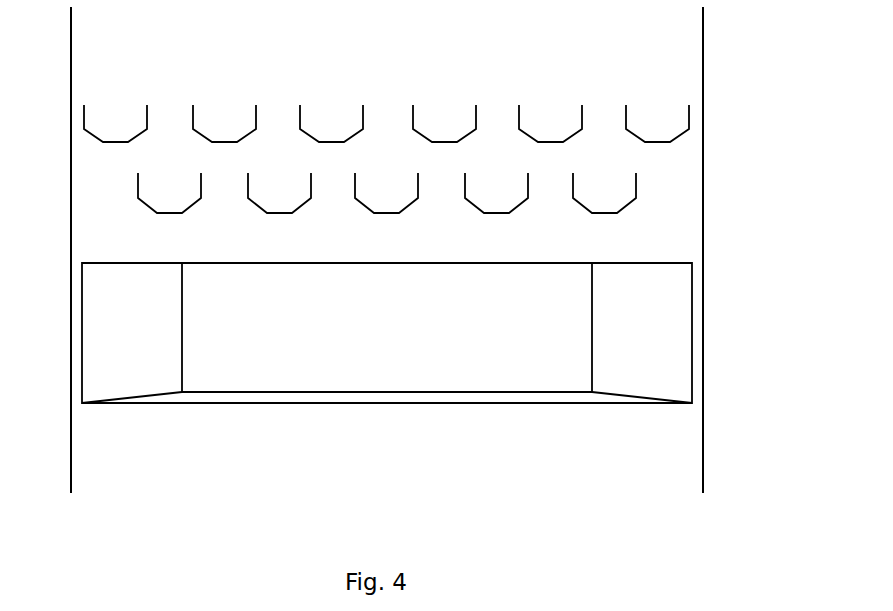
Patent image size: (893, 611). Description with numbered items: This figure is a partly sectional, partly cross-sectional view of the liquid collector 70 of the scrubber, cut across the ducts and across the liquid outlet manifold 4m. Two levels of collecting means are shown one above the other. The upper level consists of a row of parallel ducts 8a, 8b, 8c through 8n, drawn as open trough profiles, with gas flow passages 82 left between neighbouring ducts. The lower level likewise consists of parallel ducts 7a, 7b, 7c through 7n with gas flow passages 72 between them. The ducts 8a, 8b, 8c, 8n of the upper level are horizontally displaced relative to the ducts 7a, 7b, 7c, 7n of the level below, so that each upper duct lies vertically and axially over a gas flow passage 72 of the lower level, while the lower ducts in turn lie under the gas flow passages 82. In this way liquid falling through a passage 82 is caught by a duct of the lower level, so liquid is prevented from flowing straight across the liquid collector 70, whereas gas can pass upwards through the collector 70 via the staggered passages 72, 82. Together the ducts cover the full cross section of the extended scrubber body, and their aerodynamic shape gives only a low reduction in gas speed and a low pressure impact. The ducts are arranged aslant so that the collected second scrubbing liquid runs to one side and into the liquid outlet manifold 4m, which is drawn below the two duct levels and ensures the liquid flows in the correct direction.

The liquid collector 70 is at (732, 55).
The duct 8a is at (145, 112).
The duct 8b is at (256, 112).
The duct 8c is at (353, 114).
The duct 8n is at (683, 118).
The gas flow passage 82 is at (193, 123).
The duct 7a is at (189, 195).
The duct 7b is at (298, 186).
The duct 7c is at (401, 193).
The duct 7n is at (624, 193).
The gas flow passage 72 is at (246, 201).
The liquid outlet manifold 4m is at (412, 339).